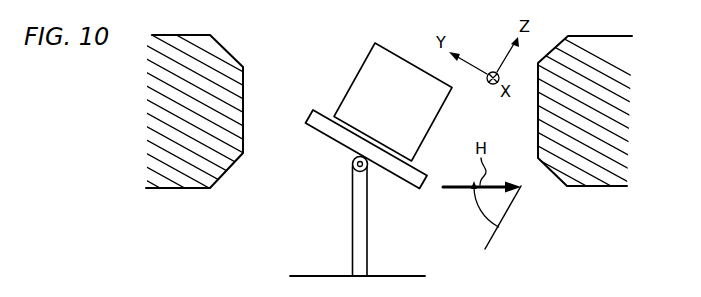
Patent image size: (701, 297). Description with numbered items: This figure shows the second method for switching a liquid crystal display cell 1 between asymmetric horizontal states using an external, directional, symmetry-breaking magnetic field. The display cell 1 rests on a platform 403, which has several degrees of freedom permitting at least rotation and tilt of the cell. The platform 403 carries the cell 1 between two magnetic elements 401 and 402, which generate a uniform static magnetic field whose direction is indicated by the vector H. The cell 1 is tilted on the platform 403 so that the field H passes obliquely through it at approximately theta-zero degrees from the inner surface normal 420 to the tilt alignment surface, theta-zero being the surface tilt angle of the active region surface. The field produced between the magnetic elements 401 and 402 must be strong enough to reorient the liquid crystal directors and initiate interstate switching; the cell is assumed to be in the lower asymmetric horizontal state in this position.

The liquid crystal display cell 1 is at (373, 82).
The magnetic element 401 is at (155, 117).
The magnetic element 402 is at (615, 117).
The platform 403 is at (363, 218).
The inner surface normal 420 is at (505, 217).